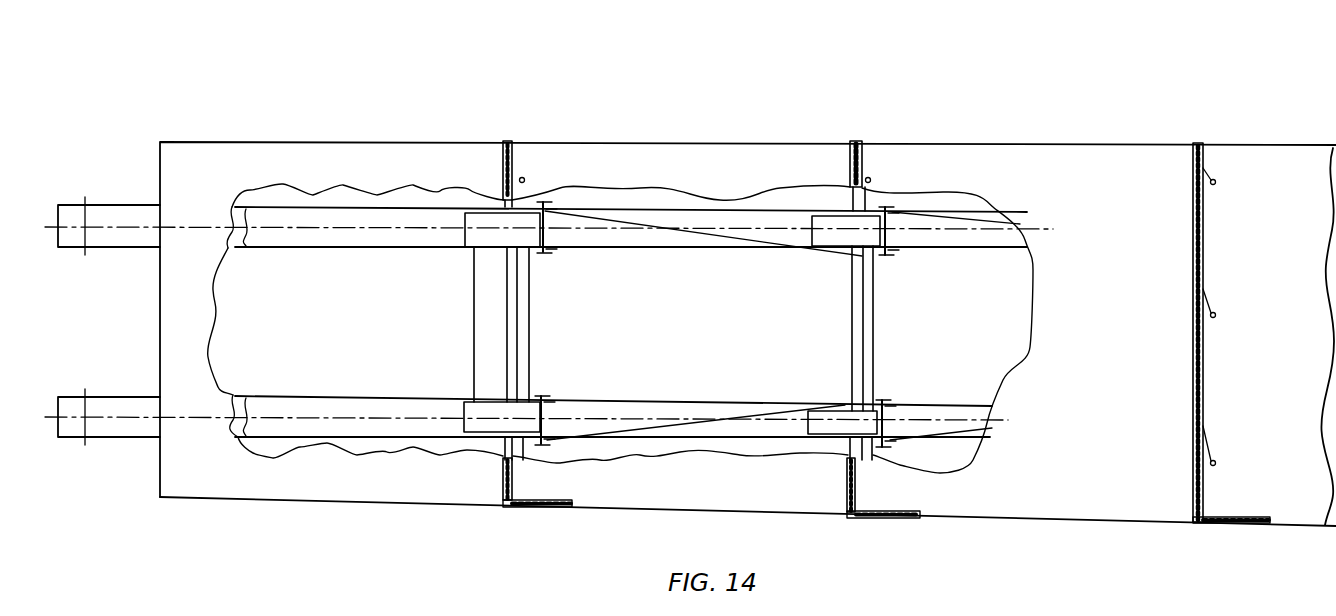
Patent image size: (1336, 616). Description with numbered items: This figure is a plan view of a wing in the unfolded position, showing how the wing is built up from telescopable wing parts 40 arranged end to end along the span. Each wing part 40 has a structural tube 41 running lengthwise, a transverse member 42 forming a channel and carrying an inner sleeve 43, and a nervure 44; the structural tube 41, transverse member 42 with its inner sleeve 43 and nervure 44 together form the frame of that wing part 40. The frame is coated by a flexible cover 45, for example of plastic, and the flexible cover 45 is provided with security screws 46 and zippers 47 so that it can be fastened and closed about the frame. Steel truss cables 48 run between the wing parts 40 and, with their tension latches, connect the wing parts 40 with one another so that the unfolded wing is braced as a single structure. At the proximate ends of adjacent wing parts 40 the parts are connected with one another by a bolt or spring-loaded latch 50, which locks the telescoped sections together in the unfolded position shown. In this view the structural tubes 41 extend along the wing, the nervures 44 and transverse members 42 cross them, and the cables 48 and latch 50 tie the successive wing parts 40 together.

The wing part 40 is at (390, 160).
The structural tube 41 is at (300, 408).
The transverse member 42 is at (447, 615).
The inner sleeve 43 is at (512, 615).
The nervure 44 is at (527, 335).
The flexible cover 45 is at (822, 182).
The security screw 46 is at (1192, 387).
The zipper 47 is at (533, 508).
The steel truss cable 48 is at (730, 412).
The bolt or spring-loaded latch 50 is at (543, 420).